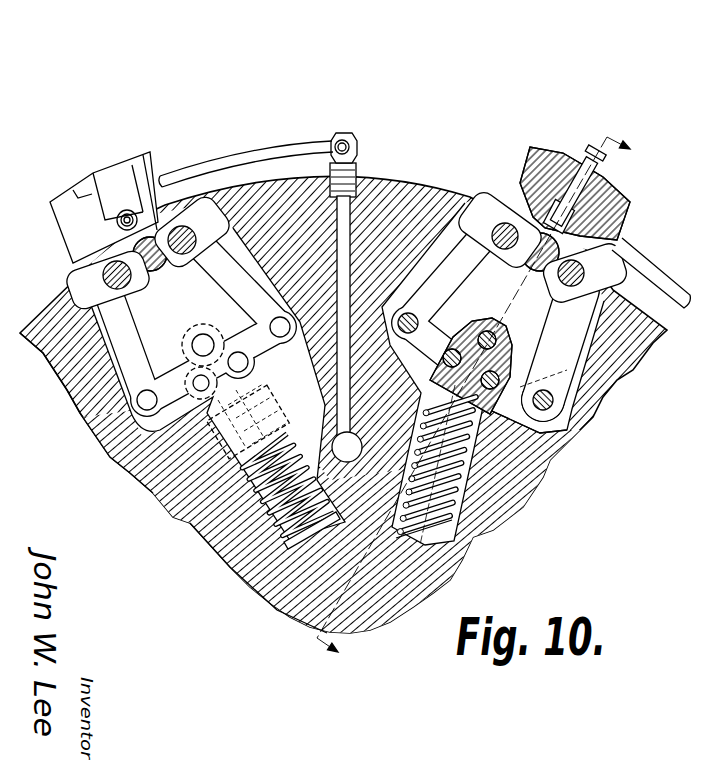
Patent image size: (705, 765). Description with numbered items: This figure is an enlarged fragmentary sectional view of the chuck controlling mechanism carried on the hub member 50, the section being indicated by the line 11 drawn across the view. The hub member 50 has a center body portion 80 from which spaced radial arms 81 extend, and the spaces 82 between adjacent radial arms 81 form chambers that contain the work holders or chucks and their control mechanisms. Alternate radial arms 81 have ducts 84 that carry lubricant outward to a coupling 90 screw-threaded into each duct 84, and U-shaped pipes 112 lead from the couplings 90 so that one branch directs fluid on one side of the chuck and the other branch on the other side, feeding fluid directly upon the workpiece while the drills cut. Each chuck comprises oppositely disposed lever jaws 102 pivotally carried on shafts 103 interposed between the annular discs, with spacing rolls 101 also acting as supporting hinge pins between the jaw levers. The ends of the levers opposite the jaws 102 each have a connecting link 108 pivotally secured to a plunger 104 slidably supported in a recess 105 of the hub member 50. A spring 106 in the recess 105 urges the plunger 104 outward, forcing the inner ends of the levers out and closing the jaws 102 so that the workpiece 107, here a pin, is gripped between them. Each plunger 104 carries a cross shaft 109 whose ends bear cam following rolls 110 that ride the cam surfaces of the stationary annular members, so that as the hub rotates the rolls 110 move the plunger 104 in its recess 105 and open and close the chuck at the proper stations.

The hub member 50 is at (277, 567).
The center body portion 80 is at (413, 593).
The radial arms 81 is at (422, 203).
The spaces 82 is at (110, 363).
The ducts 84 is at (342, 218).
The coupling 90 is at (348, 137).
The spacing rolls 101 is at (162, 270).
The lever jaws 102 is at (530, 150).
The shafts 103 is at (118, 282).
The plunger 104 is at (137, 470).
The recess 105 is at (277, 510).
The spring 106 is at (287, 528).
The workpiece 107 is at (590, 155).
The connecting link 108 is at (155, 383).
The cross shaft 109 is at (203, 342).
The cam following rolls 110 is at (182, 340).
The U-shaped pipes 112 is at (270, 155).
The section line 11- 11 is at (485, 401).